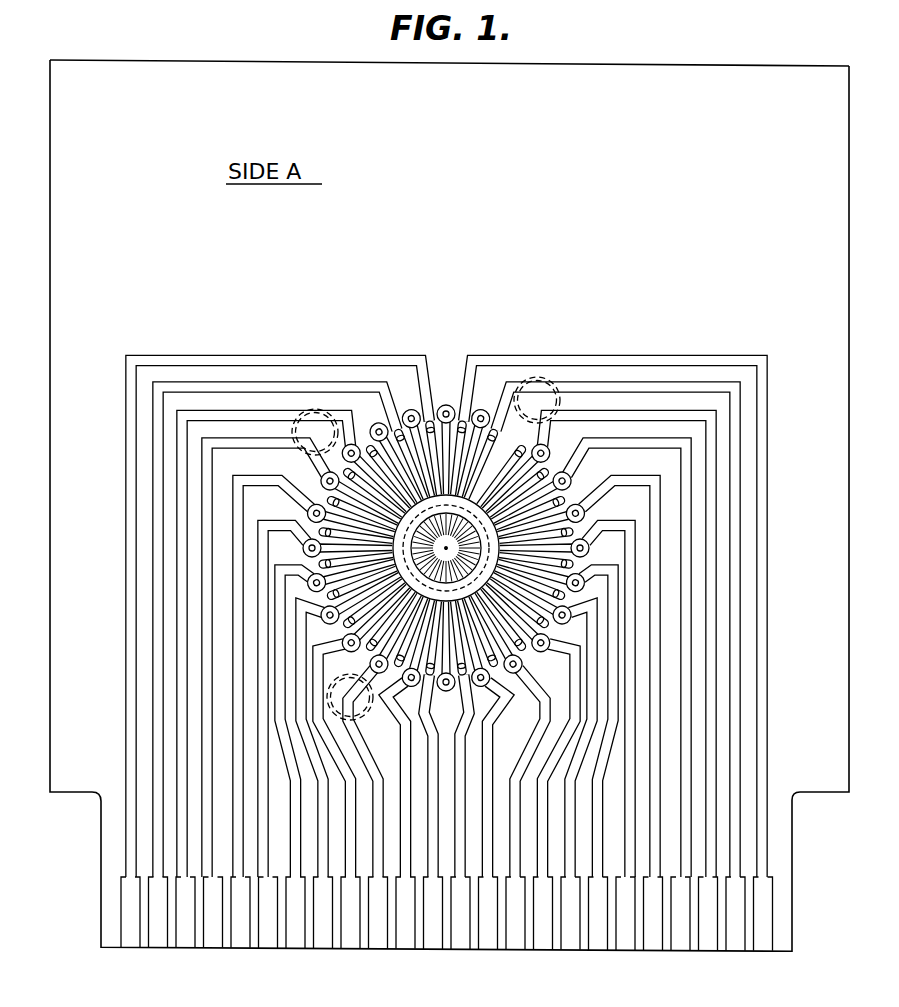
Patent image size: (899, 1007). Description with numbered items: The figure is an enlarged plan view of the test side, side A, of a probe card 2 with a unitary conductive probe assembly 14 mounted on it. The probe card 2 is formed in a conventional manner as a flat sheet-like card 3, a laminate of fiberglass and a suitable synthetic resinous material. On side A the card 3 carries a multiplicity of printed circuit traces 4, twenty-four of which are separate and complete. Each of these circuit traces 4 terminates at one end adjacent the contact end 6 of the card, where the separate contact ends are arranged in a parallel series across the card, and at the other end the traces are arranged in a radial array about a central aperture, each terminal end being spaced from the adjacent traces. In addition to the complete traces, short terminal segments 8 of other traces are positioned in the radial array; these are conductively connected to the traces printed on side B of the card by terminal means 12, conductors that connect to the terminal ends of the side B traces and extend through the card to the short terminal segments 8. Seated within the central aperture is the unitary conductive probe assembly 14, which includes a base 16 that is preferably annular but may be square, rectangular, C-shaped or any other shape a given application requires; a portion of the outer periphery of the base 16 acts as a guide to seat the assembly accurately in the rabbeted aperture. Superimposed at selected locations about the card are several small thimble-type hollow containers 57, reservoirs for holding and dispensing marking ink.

The probe card 2 is at (741, 48).
The card 3 is at (619, 78).
The printed circuit traces 4 is at (625, 355).
The contact end 6 is at (108, 912).
The short terminal segments 8 is at (448, 403).
The terminal means 12 is at (384, 430).
The unitary conductive probe assembly 14 is at (572, 475).
The base 16 is at (484, 589).
The hollow containers 57 is at (318, 409).